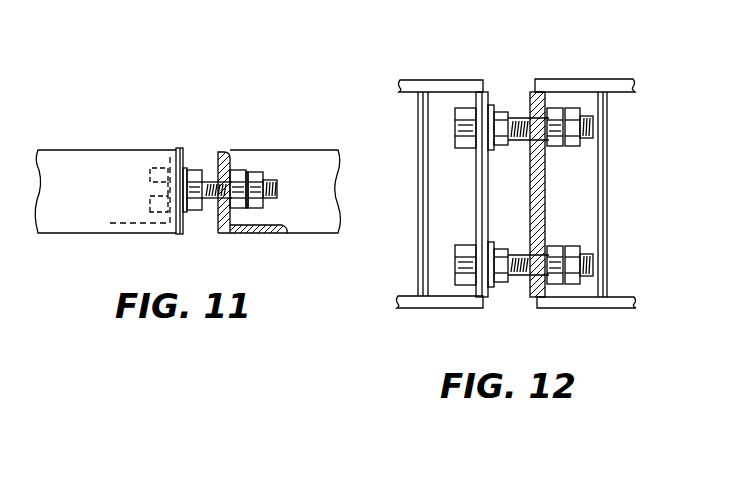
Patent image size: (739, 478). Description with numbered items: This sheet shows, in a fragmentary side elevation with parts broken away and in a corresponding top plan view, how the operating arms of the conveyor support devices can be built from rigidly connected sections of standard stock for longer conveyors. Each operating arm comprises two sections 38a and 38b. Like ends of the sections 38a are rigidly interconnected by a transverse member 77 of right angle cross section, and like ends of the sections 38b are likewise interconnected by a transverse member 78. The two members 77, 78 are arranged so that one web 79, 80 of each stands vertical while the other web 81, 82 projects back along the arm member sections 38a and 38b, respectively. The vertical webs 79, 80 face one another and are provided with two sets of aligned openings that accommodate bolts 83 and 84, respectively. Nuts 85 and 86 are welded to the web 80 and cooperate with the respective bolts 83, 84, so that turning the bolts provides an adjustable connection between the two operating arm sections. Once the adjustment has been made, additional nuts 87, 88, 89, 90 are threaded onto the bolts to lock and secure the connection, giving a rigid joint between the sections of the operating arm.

In FIG. 11, the operating arm section 38a is at (95, 150).
In FIG. 12, the operating arm section 38a is at (446, 80).
In FIG. 11, the operating arm section 38b is at (272, 151).
In FIG. 12, the operating arm section 38b is at (555, 80).
In FIG. 11, the transverse member 77 is at (181, 240).
In FIG. 12, the transverse member 77 is at (428, 243).
In FIG. 11, the transverse member 78 is at (272, 240).
In FIG. 12, the transverse member 78 is at (598, 192).
In FIG. 11, the vertical web 79 is at (181, 148).
In FIG. 12, the vertical web 79 is at (483, 208).
In FIG. 11, the vertical web 80 is at (221, 152).
In FIG. 12, the vertical web 80 is at (546, 206).
In FIG. 11, the web 81 is at (128, 222).
In FIG. 12, the web 81 is at (438, 140).
In FIG. 11, the web 82 is at (284, 235).
In FIG. 12, the web 82 is at (600, 234).
In FIG. 11, the bolt 83 is at (277, 197).
In FIG. 12, the bolt 83 is at (452, 146).
In FIG. 11, the bolt 84 is at (339, 194).
In FIG. 12, the bolt 84 is at (458, 263).
In FIG. 11, the nut 85 is at (238, 170).
In FIG. 12, the nut 85 is at (556, 150).
In FIG. 11, the nut 86 is at (270, 155).
In FIG. 12, the nut 86 is at (548, 250).
In FIG. 11, the additional nut 87 is at (188, 166).
In FIG. 12, the additional nut 87 is at (497, 105).
In FIG. 11, the additional nut 88 is at (206, 149).
In FIG. 12, the additional nut 88 is at (502, 284).
In FIG. 11, the additional nut 89 is at (256, 171).
In FIG. 12, the additional nut 89 is at (577, 110).
In FIG. 11, the additional nut 90 is at (296, 181).
In FIG. 12, the additional nut 90 is at (575, 244).